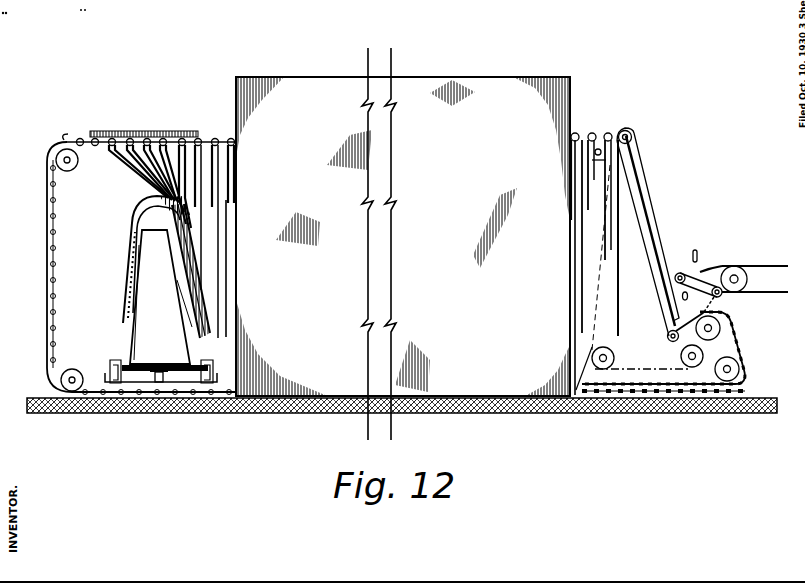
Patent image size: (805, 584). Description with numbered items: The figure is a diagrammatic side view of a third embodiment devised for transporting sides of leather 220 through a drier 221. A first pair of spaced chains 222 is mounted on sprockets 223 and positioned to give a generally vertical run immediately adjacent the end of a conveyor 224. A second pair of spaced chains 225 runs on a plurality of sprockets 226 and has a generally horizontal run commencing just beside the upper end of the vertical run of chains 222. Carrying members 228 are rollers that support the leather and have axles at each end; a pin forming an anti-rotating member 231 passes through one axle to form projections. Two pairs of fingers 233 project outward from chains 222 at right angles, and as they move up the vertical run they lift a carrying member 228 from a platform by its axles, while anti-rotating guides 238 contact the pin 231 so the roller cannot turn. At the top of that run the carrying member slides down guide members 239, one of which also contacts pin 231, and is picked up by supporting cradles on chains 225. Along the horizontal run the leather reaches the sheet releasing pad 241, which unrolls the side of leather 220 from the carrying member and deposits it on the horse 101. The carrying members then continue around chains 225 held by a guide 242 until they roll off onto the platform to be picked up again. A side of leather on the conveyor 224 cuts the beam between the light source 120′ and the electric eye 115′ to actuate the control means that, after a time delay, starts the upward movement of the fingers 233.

The horse 101 is at (125, 341).
The electric eye 115′ is at (697, 250).
The light source 120′ is at (688, 293).
The side of leather 220 is at (619, 285).
The drier 221 is at (476, 172).
The first pair of spaced chains 222 is at (632, 173).
The sprockets 223 is at (667, 338).
The conveyor 224 is at (727, 294).
The second pair of spaced chains 225 is at (56, 255).
The sprockets 226 is at (610, 366).
The carrying member 228 is at (81, 138).
The anti-rotating member 231 is at (704, 313).
The fingers 233 is at (671, 341).
The anti-rotating guides 238 is at (652, 199).
The guide members 239 is at (624, 130).
The sheet releasing pad 241 is at (172, 131).
The guide 242 is at (50, 257).